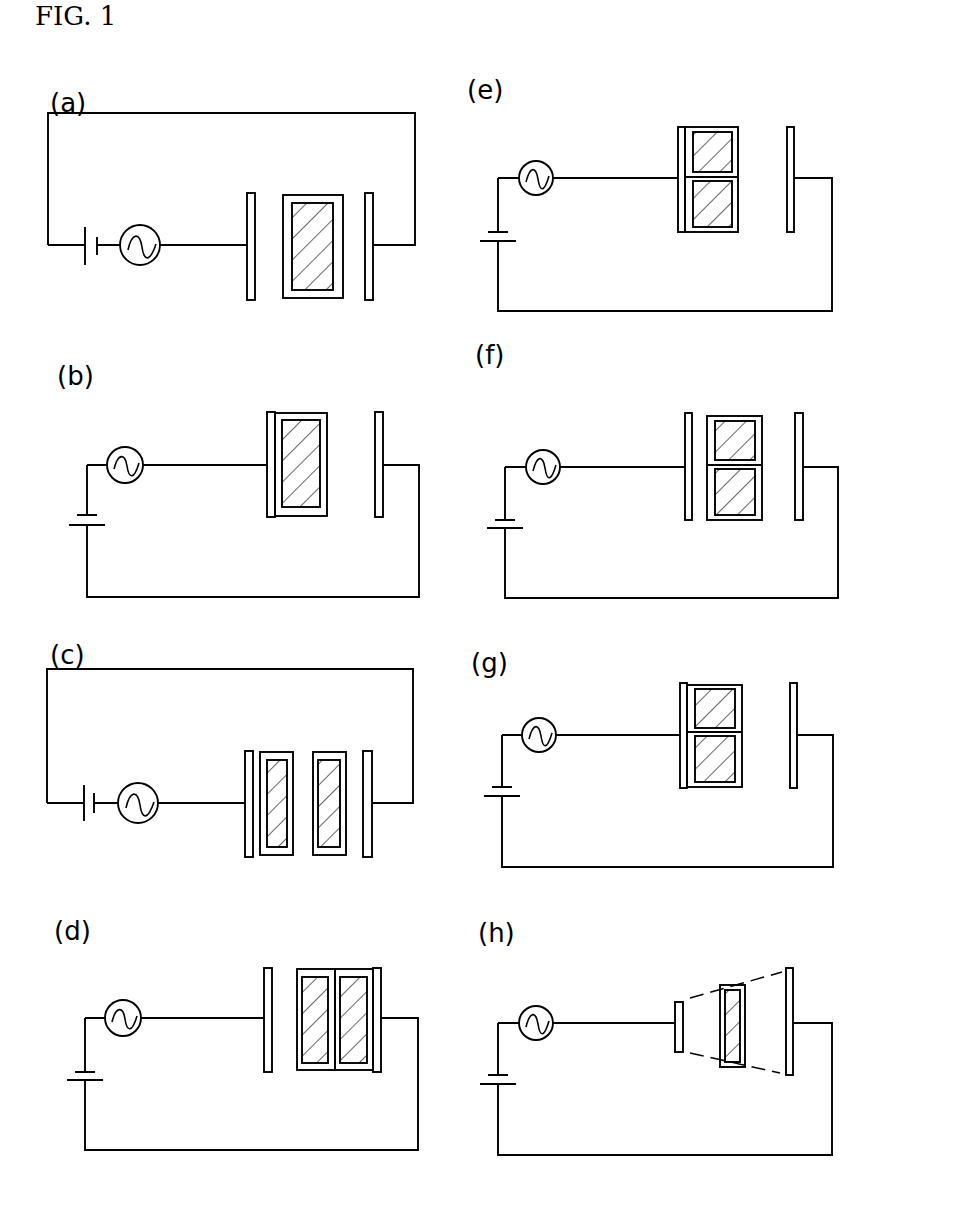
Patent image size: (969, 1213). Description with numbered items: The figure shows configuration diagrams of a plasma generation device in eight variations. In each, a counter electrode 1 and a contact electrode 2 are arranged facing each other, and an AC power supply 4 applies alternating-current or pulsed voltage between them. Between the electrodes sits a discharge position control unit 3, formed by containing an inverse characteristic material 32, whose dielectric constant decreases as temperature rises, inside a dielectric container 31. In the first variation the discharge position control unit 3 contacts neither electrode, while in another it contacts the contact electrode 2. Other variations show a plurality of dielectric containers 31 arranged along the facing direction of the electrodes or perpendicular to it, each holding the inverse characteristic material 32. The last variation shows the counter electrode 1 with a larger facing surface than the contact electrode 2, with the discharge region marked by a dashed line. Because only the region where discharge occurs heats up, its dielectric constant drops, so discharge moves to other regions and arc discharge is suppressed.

The counter electrode 1 is at (375, 195).
The contact electrode 2 is at (256, 193).
The discharge position control unit 3 is at (373, 320).
The dielectric container 31 is at (337, 288).
The inverse characteristic material 32 is at (302, 283).
The AC power supply 4 is at (156, 233).